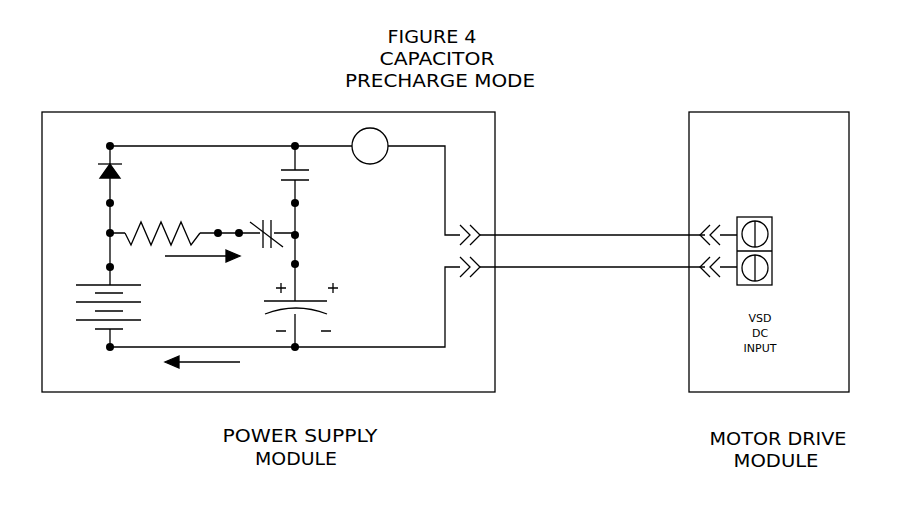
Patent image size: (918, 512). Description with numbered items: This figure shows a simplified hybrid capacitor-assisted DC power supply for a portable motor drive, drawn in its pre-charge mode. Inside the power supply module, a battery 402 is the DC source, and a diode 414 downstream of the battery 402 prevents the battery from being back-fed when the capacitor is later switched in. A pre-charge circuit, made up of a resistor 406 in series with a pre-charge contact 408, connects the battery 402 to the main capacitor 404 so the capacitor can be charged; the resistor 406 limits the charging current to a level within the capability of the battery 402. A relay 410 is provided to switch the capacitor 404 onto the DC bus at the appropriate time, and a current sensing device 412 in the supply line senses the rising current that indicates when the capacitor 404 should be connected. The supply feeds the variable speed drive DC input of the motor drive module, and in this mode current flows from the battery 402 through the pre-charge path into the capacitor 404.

The battery 402 is at (141, 302).
The main capacitor 404 is at (327, 301).
The resistor 406 is at (199, 232).
The pre-charge contact 408 is at (263, 220).
The relay 410 is at (309, 180).
The current sensing device 412 is at (385, 135).
The diode 414 is at (108, 177).